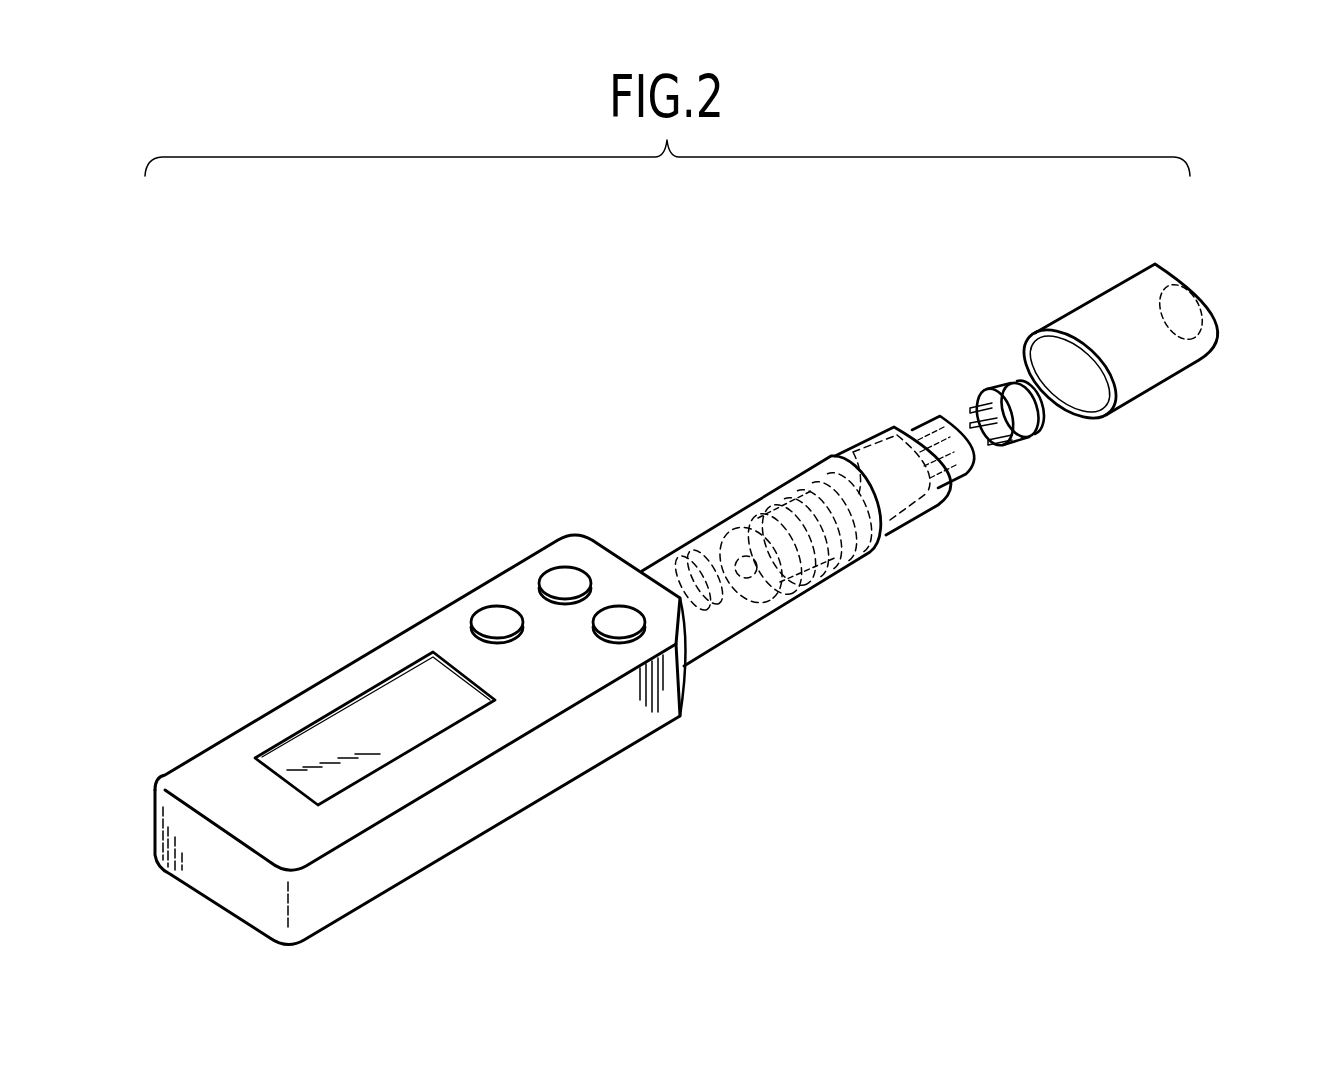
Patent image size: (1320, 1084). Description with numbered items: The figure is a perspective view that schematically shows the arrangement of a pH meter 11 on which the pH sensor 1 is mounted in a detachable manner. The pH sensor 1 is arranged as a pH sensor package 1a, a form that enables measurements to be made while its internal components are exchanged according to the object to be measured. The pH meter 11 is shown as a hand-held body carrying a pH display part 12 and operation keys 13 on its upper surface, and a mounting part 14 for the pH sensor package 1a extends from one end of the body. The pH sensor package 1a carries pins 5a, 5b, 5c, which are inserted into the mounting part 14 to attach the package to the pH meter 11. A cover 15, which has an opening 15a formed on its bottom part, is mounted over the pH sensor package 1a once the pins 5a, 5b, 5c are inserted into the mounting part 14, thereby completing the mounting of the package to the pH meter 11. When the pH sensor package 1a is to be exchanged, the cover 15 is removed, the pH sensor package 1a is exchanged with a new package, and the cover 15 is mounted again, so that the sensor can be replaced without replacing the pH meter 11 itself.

The pH sensor 1 is at (1016, 439).
The pH sensor package 1a is at (1016, 439).
The pin 5a is at (970, 405).
The pin 5b is at (963, 413).
The pin 5c is at (1020, 442).
The pH meter 11 is at (580, 777).
The pH display part 12 is at (398, 697).
The operation keys 13 is at (650, 637).
The mounting part 14 is at (883, 430).
The cover 15 is at (1150, 326).
The opening 15a is at (1195, 298).